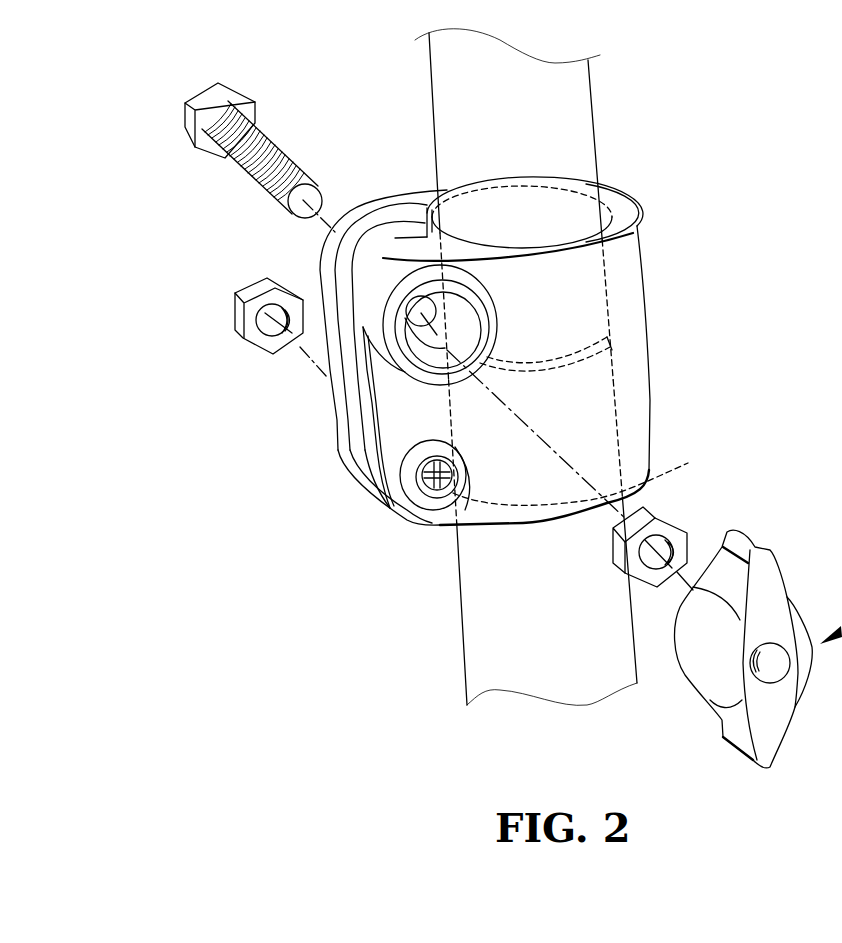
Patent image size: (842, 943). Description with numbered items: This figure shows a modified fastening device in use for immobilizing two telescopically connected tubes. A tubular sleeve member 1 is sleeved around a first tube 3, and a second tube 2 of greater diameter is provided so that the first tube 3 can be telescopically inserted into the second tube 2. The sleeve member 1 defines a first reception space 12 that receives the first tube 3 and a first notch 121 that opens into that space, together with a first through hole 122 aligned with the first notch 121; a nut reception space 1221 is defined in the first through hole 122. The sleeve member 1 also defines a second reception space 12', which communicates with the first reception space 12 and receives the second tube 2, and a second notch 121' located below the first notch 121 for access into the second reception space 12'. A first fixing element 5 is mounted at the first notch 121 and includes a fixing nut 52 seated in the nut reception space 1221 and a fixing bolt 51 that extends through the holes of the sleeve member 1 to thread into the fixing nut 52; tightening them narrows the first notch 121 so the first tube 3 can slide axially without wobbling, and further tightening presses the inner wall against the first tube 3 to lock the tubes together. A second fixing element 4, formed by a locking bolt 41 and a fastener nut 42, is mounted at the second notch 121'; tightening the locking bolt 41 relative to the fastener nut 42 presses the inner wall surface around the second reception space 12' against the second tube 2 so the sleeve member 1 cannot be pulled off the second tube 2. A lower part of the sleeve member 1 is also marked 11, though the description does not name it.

The tubular sleeve member 1 is at (688, 345).
The bottom of clamp body 11 is at (480, 525).
The first reception space 12 is at (540, 204).
The second reception space 12' is at (595, 471).
The first notch 121 is at (367, 357).
The second notch 121' is at (352, 369).
The first through hole 122 is at (443, 308).
The nut reception space 1221 is at (468, 343).
The second tube 2 is at (470, 637).
The first tube 3 is at (443, 108).
The second fixing element 4 is at (150, 367).
The locking bolt 41 is at (427, 450).
The fastener nut 42 is at (267, 347).
The first fixing element 5 is at (770, 577).
The fixing bolt 51 is at (210, 87).
The fixing nut 52 is at (667, 515).